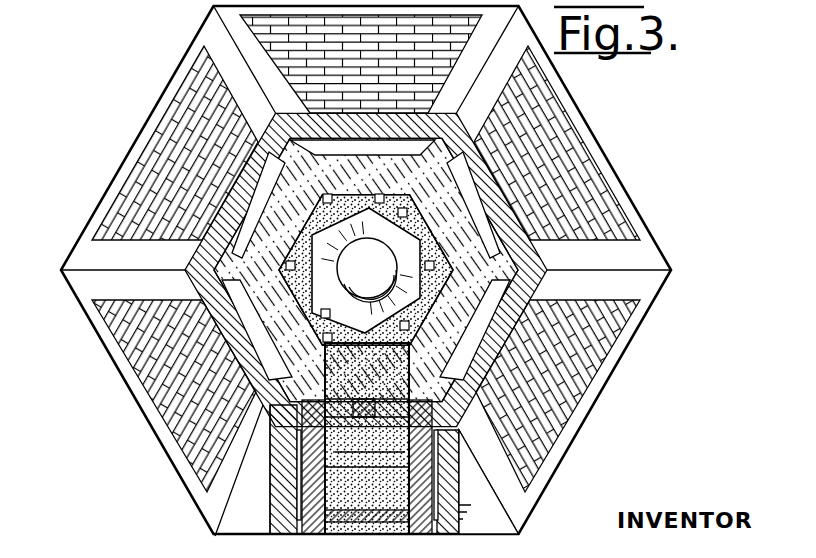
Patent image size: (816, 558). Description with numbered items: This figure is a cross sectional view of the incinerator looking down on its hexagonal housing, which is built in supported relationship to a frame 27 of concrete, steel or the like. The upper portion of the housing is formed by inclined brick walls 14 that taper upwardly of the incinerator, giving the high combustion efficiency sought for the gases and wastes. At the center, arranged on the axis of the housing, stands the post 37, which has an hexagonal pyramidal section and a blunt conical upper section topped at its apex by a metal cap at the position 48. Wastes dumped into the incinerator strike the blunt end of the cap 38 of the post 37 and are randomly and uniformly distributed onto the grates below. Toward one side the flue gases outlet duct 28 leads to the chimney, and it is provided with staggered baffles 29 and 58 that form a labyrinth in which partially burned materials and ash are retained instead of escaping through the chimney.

The inclined brick walls 14 is at (570, 181).
The frame 27 is at (636, 258).
The flue gases outlet duct 28 is at (420, 489).
The baffle 29 is at (325, 510).
The post 37 is at (352, 302).
The cap 38 is at (330, 400).
The metal cap position 48 is at (365, 270).
The baffle 58 is at (330, 455).